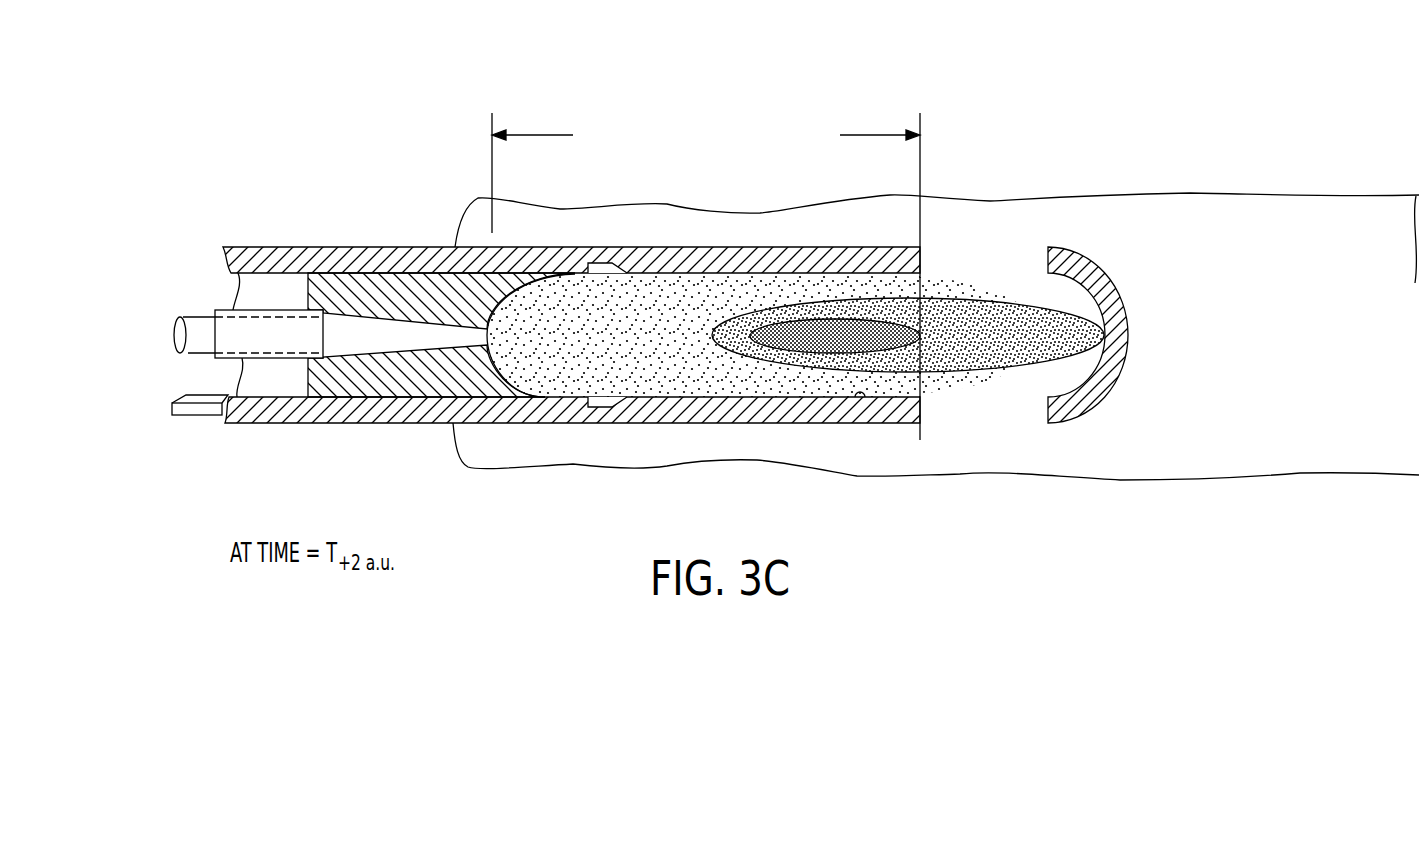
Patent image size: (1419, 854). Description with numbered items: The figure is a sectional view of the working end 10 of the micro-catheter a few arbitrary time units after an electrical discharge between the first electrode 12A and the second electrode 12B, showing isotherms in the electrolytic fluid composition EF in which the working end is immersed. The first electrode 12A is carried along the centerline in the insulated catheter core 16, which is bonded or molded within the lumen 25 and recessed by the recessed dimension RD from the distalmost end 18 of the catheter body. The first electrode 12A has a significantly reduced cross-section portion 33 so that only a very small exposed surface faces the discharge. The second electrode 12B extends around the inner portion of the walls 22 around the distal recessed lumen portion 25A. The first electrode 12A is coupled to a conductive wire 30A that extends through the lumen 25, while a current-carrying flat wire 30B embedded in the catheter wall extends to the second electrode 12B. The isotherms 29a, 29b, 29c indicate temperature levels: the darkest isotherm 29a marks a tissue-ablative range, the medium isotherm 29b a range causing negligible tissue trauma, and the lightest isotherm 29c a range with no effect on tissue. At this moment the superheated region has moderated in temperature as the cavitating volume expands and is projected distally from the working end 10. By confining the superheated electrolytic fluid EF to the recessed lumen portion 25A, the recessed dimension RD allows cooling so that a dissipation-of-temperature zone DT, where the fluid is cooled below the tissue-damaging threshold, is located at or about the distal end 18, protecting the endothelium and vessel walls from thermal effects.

The working end 10 is at (410, 80).
The first electrode 12A is at (466, 327).
The second electrode 12B is at (607, 408).
The catheter core 16 is at (312, 400).
The distalmost end 18 is at (920, 432).
The walls 22 is at (858, 400).
The lumen 25 is at (248, 291).
The distal recessed lumen portion 25A is at (689, 382).
The isotherm 29a is at (813, 302).
The isotherm 29b is at (868, 296).
The isotherm 29c is at (1007, 247).
The conductive wire 30A is at (193, 342).
The flat wire 30B is at (193, 417).
The reduced cross-section portion 33 is at (387, 330).
The electrolytic fluid composition EF is at (565, 385).
The recessed dimension RD is at (862, 134).
The dissipation-of-temperature zone DT is at (1077, 258).